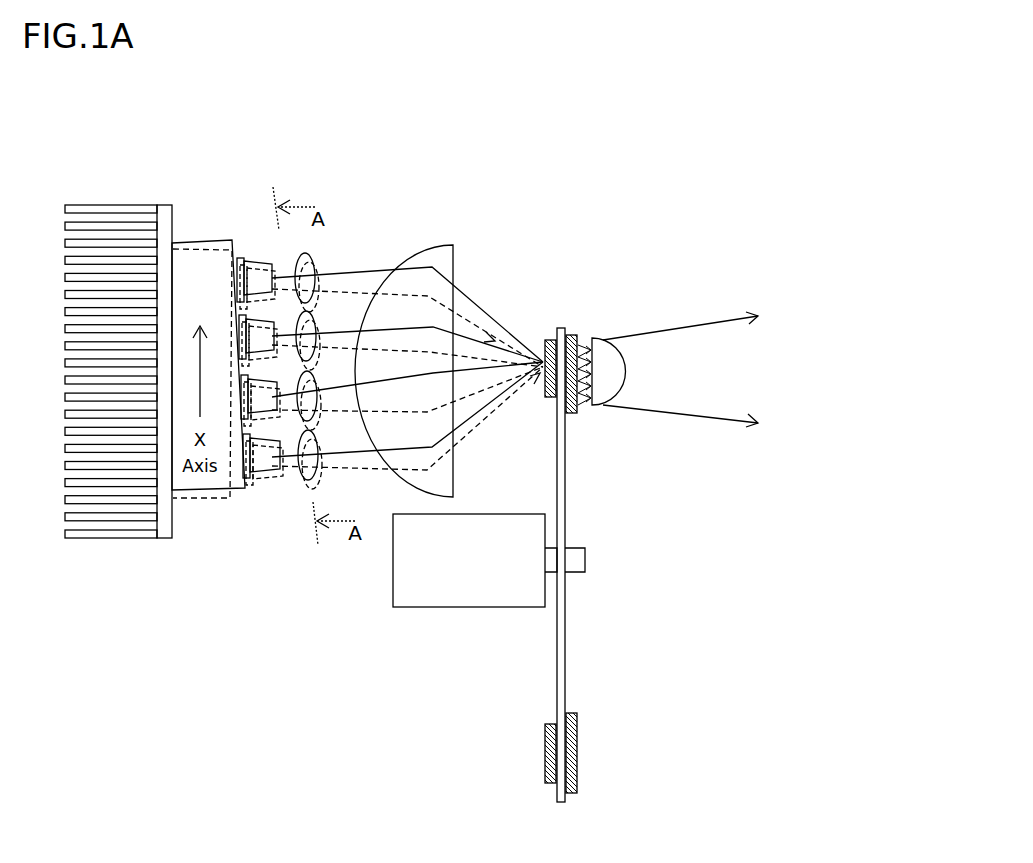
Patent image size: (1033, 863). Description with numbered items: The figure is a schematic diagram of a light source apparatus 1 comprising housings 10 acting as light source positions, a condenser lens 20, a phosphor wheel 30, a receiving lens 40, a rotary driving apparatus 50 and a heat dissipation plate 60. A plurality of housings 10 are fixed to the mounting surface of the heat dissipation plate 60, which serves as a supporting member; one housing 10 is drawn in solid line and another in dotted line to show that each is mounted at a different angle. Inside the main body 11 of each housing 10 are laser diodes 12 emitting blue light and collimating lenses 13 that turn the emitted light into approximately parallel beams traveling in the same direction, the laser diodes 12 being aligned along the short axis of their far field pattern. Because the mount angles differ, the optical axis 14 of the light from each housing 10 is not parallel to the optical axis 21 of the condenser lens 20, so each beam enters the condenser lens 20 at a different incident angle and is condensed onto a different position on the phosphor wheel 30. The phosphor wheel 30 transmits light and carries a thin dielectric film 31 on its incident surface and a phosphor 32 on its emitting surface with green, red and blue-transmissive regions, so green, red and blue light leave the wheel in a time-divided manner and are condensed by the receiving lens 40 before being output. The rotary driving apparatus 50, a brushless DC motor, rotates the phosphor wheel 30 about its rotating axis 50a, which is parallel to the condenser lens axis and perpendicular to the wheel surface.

The light source apparatus 1 is at (420, 762).
The housing 10 is at (325, 183).
The main body 11 is at (195, 244).
The laser diode 12 is at (263, 473).
The collimating lens 13 is at (312, 268).
The optical axis 14 is at (345, 271).
The condenser lens 20 is at (431, 245).
The optical axis of the condenser lens 21 is at (746, 369).
The phosphor wheel 30 is at (573, 647).
The dielectric film 31 is at (550, 341).
The phosphor 32 is at (572, 335).
The receiving lens 40 is at (600, 410).
The rotary driving apparatus 50 is at (469, 607).
The rotating axis 50a is at (604, 561).
The heat dissipation plate 60 is at (163, 533).